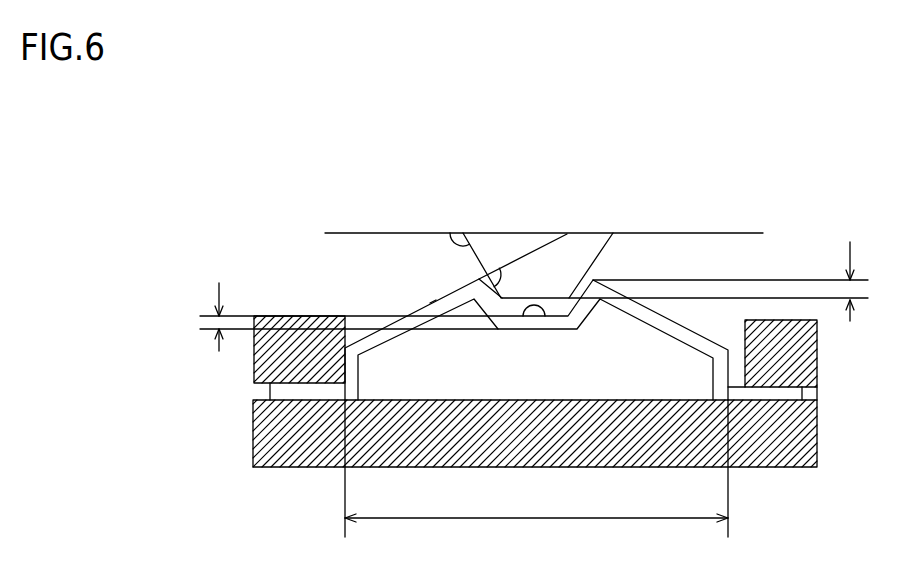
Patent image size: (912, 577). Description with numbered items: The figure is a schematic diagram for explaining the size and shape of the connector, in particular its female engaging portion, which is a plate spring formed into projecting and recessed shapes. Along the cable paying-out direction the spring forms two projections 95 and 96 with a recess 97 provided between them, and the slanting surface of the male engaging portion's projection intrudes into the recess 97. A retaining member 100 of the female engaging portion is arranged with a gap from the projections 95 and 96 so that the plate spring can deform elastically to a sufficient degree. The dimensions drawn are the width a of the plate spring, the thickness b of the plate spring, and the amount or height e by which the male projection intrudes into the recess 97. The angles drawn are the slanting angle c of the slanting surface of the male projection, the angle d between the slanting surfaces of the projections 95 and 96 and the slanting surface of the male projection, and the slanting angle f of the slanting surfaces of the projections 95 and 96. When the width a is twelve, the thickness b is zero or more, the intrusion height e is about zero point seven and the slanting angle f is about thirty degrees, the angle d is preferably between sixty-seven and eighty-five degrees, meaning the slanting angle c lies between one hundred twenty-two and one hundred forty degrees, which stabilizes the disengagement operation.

The projection 95 is at (443, 293).
The projection 96 is at (670, 317).
The recess 97 is at (527, 318).
The retaining member 100 is at (256, 360).
The width of the plate spring a is at (536, 472).
The thickness of the plate spring b is at (207, 311).
The slanting angle of the slanting surface of the projection c is at (453, 250).
The angle between the slanting surfaces d is at (510, 278).
The amount of intrusion of the projection into the recess e is at (859, 277).
The slanting angle of the slanting surfaces of the projections f is at (430, 303).